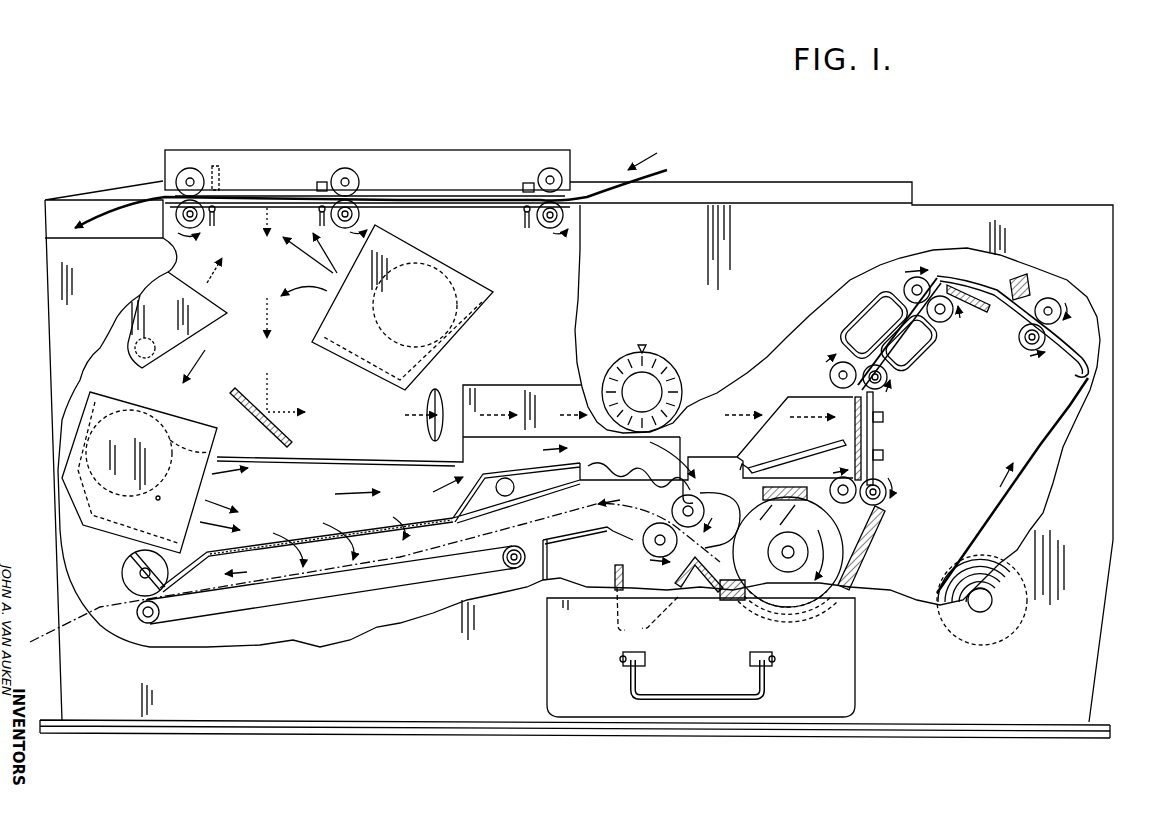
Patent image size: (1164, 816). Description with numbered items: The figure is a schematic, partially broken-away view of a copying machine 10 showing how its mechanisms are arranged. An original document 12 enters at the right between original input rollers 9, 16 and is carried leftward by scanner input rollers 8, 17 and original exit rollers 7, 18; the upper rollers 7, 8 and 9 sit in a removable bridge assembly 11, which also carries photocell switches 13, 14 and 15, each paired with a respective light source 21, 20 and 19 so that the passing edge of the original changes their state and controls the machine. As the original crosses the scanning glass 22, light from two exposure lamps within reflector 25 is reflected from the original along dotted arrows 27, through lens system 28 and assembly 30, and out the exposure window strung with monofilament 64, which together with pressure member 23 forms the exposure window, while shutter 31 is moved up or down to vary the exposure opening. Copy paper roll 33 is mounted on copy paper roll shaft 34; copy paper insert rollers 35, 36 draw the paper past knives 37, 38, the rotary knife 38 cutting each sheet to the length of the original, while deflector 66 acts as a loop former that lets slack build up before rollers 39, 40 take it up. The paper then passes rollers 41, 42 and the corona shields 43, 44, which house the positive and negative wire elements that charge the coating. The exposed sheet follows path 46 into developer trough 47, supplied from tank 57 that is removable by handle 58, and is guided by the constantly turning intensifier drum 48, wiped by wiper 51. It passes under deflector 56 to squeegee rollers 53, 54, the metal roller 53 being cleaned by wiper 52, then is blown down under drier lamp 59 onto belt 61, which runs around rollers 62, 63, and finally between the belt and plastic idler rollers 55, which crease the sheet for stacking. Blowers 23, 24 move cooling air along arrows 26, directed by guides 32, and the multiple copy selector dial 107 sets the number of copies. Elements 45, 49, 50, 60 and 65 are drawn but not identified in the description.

The original exit roller 7 is at (190, 167).
The scanner input roller 8 is at (348, 168).
The original input roller 9 is at (560, 172).
The copying machine 10 is at (1103, 112).
The bridge assembly 11 is at (485, 150).
The original document 12 is at (650, 184).
The photocell switch 13 is at (527, 182).
The photocell switch 14 is at (320, 181).
The photocell switch 15 is at (216, 166).
The original input roller 16 is at (566, 217).
The scanner input roller 17 is at (360, 214).
The original exit roller 18 is at (175, 213).
The light source 19 is at (216, 212).
The light source 20 is at (319, 211).
The light source 21 is at (523, 211).
The scanning glass 22 is at (258, 210).
The blower 23 is at (458, 290).
The blower 24 is at (128, 412).
The reflector 25 is at (212, 285).
The air flow arrows 26 is at (225, 500).
The light path arrows 27 is at (290, 409).
The lens system 28 is at (428, 427).
The optical assembly 30 is at (532, 385).
The shutter 31 is at (794, 462).
The air guides 32 is at (266, 546).
The copy paper roll 33 is at (993, 565).
The copy paper roll shaft 34 is at (978, 604).
The copy paper insert roller 35 is at (1022, 348).
The copy paper insert roller 36 is at (1052, 300).
The knife 37 is at (1020, 277).
The rotary knife 38 is at (977, 312).
The copy paper roller 39 is at (942, 323).
The copy paper roller 40 is at (910, 278).
The copy paper roller 41 is at (888, 386).
The copy paper roller 42 is at (830, 375).
The corona shield 43 is at (925, 352).
The corona shield 44 is at (862, 312).
The paper guide path 45 is at (880, 478).
The copy sheet path 46 is at (46, 621).
The developer trough 47 is at (858, 567).
The intensifier drum 48 is at (838, 546).
The roller 49 is at (890, 500).
The roller 50 is at (843, 503).
The wiper 51 is at (783, 503).
The wiper 52 is at (688, 467).
The squeegee roller 53 is at (705, 505).
The squeegee roller 54 is at (641, 540).
The plastic idler rollers 55 is at (122, 570).
The deflector 56 is at (770, 550).
The developer tank 57 is at (852, 657).
The handle 58 is at (732, 693).
The drier lamp 59 is at (514, 478).
The copy sheet 60 is at (619, 469).
The belt 61 is at (352, 575).
The belt roller 62 is at (519, 550).
The belt roller 63 is at (137, 614).
The monofilament exposure window 64 is at (852, 410).
The reflector 65 is at (290, 440).
The deflector 66 is at (945, 274).
The multiple copy selector dial 107 is at (678, 372).